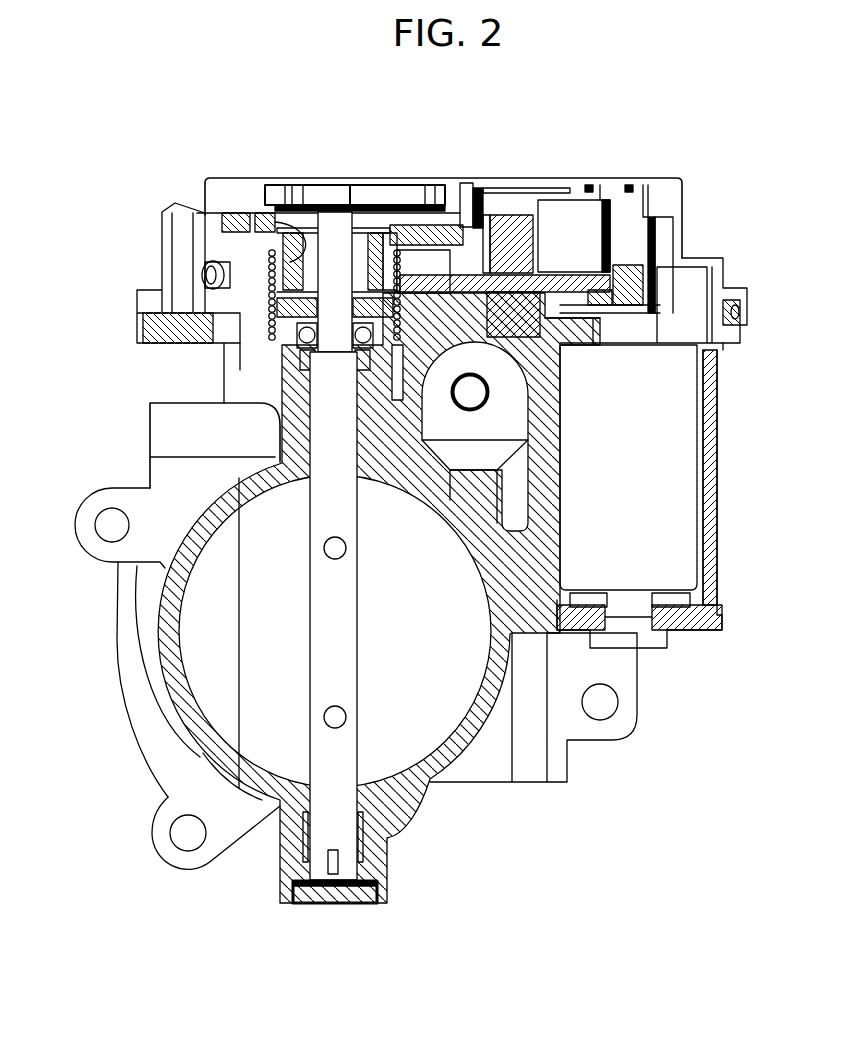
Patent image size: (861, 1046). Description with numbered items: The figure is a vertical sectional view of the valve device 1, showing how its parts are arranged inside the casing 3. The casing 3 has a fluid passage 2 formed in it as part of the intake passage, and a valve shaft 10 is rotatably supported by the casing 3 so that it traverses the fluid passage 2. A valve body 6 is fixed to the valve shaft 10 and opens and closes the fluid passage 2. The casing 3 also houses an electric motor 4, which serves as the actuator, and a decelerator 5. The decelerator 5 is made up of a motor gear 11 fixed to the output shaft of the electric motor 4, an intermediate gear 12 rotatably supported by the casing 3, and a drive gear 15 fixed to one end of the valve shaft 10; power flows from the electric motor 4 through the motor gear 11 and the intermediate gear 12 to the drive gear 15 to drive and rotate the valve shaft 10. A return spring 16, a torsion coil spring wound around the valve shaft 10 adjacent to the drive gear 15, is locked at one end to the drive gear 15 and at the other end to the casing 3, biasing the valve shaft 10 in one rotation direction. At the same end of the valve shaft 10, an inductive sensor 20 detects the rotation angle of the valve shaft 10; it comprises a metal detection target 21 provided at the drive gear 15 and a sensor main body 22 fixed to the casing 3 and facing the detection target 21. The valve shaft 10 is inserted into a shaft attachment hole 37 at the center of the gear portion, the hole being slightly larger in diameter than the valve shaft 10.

The valve device 1 is at (766, 172).
The fluid passage 2 is at (205, 655).
The casing 3 is at (152, 533).
The electric motor 4 is at (653, 531).
The decelerator 5 is at (547, 214).
The valve body 6 is at (283, 722).
The valve shaft 10 is at (342, 835).
The motor gear 11 is at (632, 262).
The intermediate gear 12 is at (508, 217).
The drive gear 15 is at (467, 212).
The return spring 16 is at (262, 328).
The inductive sensor 20 is at (288, 125).
The detection target 21 is at (368, 210).
The sensor main body 22 is at (328, 202).
The shaft attachment hole 37 is at (275, 222).